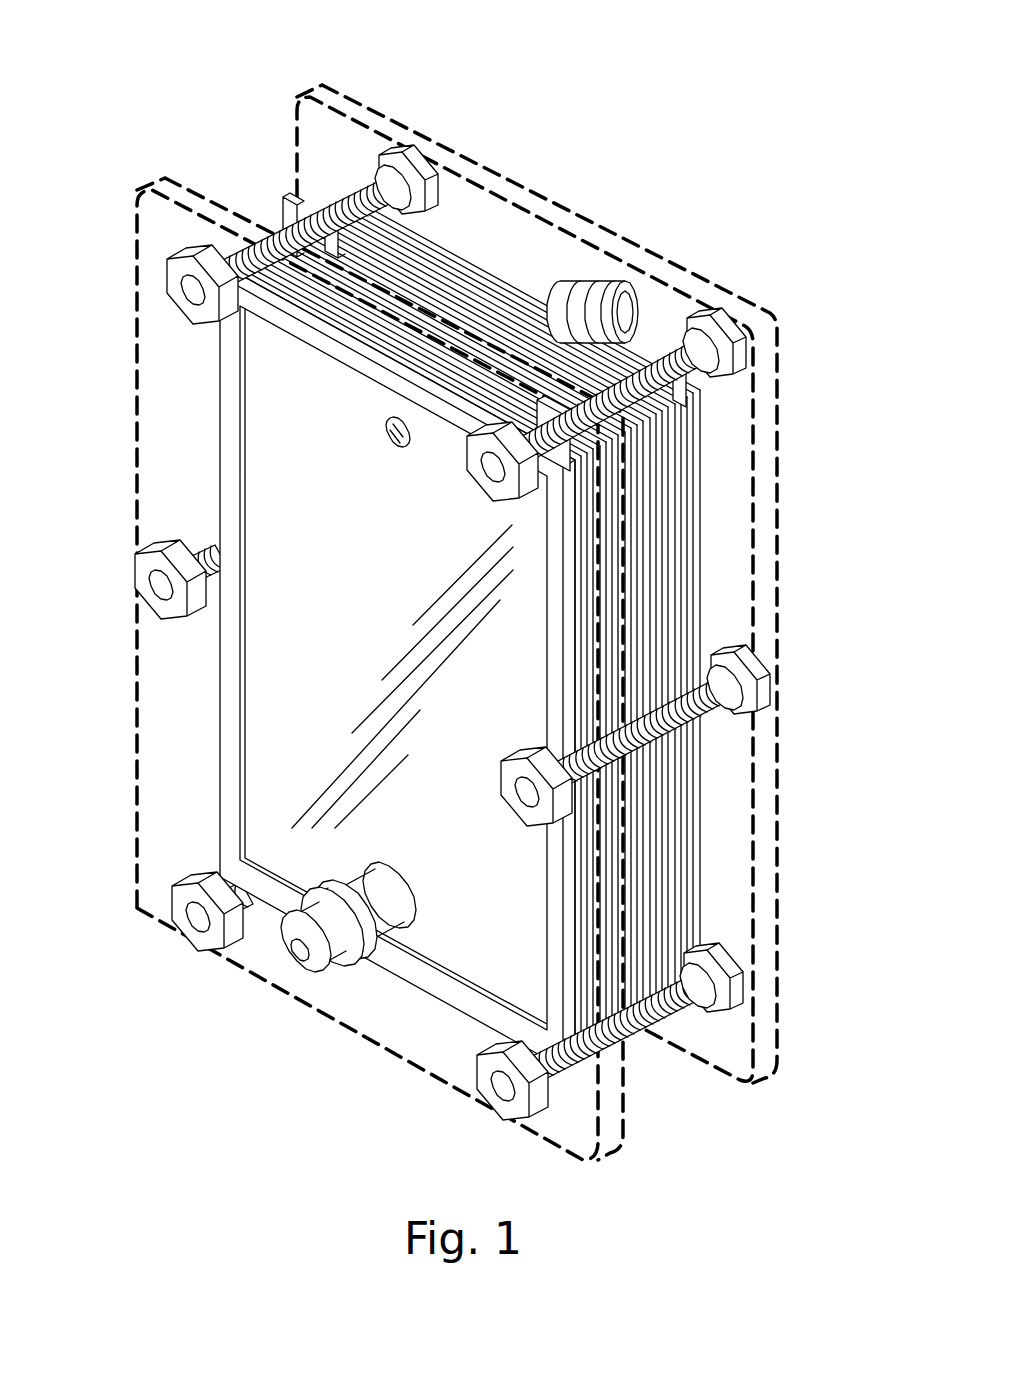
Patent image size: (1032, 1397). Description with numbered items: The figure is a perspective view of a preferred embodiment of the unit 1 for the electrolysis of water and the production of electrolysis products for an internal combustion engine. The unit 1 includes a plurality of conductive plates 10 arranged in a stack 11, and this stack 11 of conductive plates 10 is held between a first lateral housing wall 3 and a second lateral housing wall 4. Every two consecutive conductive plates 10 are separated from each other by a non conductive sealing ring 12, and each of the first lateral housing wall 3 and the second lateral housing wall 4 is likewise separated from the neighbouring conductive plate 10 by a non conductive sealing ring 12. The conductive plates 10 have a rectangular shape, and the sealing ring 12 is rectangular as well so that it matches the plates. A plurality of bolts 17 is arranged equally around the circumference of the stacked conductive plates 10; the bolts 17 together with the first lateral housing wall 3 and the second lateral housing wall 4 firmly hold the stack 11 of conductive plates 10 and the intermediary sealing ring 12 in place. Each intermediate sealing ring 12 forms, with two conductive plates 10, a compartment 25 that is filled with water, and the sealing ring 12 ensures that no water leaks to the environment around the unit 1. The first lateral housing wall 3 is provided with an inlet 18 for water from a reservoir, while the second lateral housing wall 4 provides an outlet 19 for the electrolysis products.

The unit 1 is at (463, 619).
The first lateral housing wall 3 is at (413, 1040).
The second lateral housing wall 4 is at (363, 122).
The conductive plates 10 is at (487, 272).
The stack 11 is at (658, 1095).
The non conductive sealing ring 12 is at (323, 669).
The bolts 17 is at (463, 670).
The inlet 18 is at (300, 945).
The outlet 19 is at (593, 297).
The compartment 25 is at (270, 649).